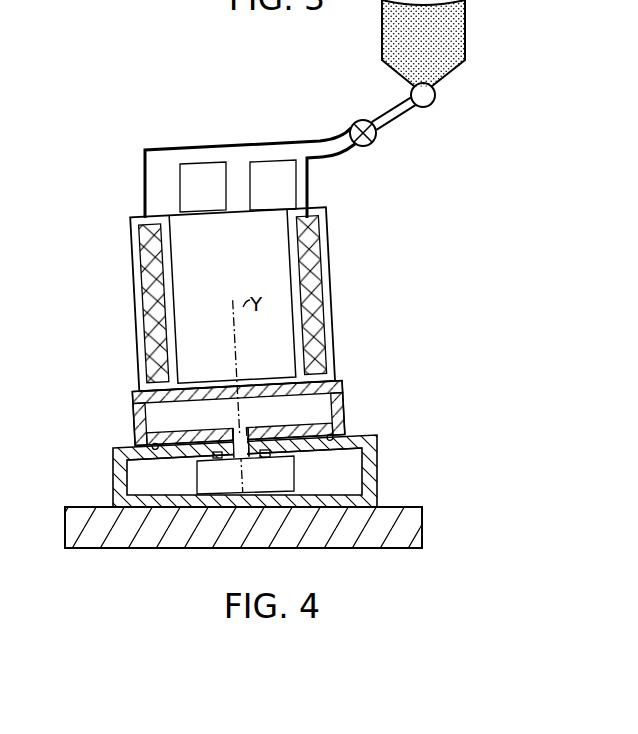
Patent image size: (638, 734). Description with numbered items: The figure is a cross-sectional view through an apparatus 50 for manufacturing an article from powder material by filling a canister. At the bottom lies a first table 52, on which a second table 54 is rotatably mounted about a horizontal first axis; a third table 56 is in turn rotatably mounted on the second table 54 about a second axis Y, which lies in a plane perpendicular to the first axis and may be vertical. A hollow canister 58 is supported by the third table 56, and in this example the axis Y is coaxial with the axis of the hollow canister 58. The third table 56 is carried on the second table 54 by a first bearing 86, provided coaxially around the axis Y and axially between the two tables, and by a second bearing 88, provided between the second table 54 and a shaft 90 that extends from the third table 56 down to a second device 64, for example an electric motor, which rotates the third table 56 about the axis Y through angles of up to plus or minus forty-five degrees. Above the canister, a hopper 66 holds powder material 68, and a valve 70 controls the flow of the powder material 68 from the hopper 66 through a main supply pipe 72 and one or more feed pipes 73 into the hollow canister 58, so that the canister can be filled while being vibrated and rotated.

The apparatus 50 is at (440, 253).
The first table 52 is at (423, 519).
The second table 54 is at (377, 463).
The third table 56 is at (238, 413).
The hollow canister 58 is at (232, 299).
The second device 64 is at (296, 472).
The hopper 66 is at (467, 43).
The powder material 68 is at (233, 299).
The valve 70 is at (377, 144).
The main supply pipe 72 is at (409, 120).
The feed pipes 73 is at (143, 177).
The first bearing 86 is at (242, 441).
The second bearing 88 is at (212, 458).
The shaft 90 is at (250, 456).